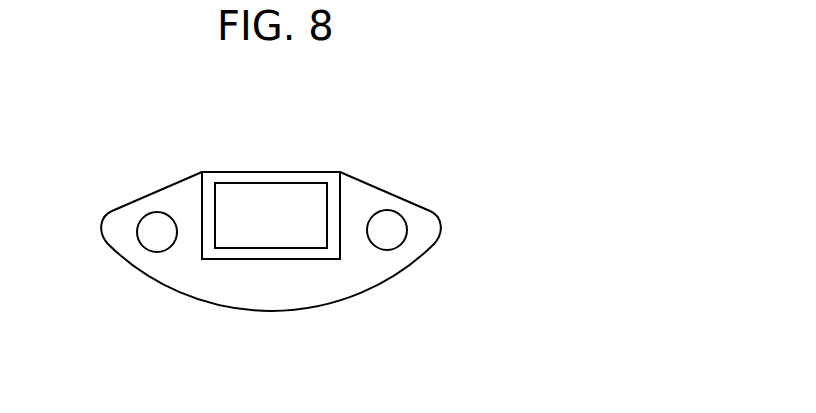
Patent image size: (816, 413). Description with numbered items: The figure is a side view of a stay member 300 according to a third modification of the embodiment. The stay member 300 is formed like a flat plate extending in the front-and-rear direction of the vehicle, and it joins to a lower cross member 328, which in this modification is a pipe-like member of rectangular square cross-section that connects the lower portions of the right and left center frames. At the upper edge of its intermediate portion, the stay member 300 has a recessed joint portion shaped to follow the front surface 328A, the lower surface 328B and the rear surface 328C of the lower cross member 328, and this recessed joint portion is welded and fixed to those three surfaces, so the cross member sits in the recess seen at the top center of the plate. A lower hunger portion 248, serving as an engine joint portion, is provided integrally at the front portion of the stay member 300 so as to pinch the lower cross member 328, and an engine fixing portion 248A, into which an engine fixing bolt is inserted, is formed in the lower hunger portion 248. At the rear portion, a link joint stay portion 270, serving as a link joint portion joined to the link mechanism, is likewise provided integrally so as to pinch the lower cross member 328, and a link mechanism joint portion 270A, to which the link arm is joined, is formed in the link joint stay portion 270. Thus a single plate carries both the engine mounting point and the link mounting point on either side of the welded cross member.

The stay member 300 is at (315, 311).
The lower cross member 328 is at (265, 172).
The front surface 328A is at (202, 216).
The lower surface 328B is at (257, 260).
The rear surface 328C is at (340, 218).
The lower hunger portion 248 is at (187, 262).
The engine fixing portion 248A is at (152, 252).
The link joint stay portion 270 is at (361, 262).
The link mechanism joint portion 270A is at (393, 249).